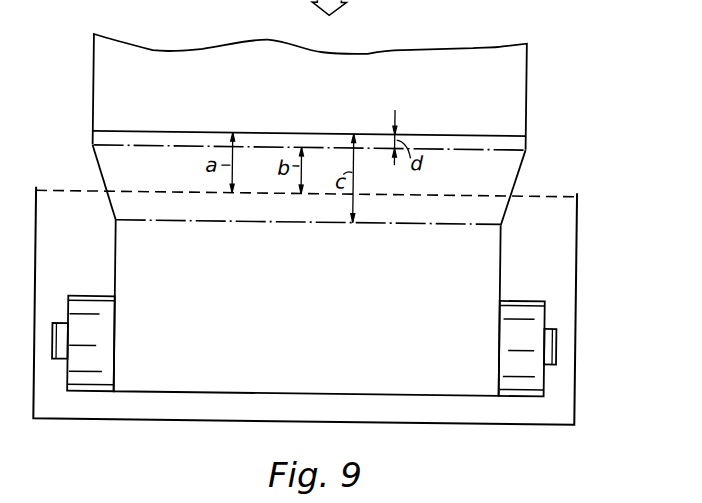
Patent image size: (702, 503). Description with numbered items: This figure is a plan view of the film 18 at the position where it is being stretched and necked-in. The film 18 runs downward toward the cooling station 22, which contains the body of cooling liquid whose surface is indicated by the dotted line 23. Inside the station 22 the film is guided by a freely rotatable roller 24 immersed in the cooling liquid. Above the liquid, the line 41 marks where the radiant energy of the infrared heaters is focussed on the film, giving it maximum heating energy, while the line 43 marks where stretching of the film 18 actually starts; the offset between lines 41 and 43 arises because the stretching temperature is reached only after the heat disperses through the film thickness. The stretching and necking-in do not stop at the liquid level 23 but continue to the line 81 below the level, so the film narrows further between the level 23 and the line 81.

The film 18 is at (414, 82).
The line onto which the radiant energy was focussed 41 is at (496, 133).
The line where the stretching of the film started 43 is at (504, 150).
The level of the cooling liquid 23 is at (531, 195).
The line where stretching and necking-in stop 81 is at (478, 225).
The freely rotatable roller 24 is at (531, 322).
The station 22 is at (573, 391).